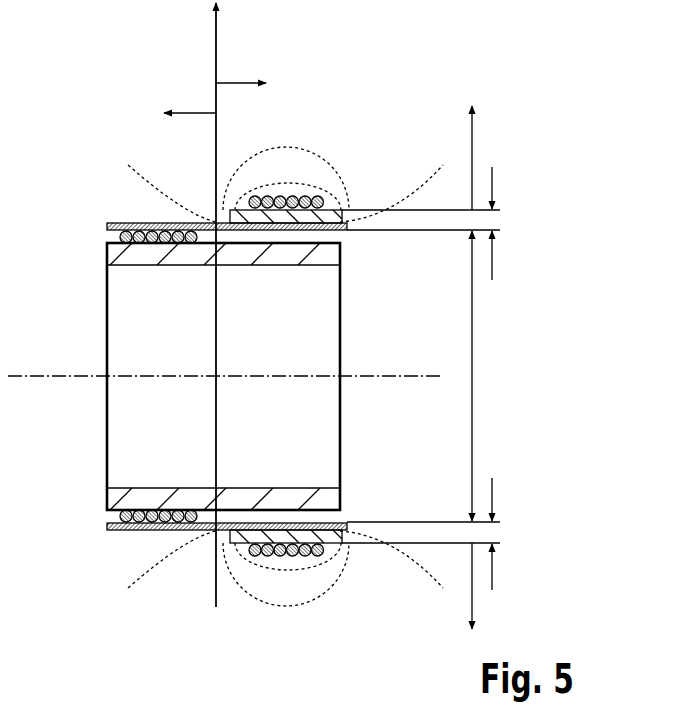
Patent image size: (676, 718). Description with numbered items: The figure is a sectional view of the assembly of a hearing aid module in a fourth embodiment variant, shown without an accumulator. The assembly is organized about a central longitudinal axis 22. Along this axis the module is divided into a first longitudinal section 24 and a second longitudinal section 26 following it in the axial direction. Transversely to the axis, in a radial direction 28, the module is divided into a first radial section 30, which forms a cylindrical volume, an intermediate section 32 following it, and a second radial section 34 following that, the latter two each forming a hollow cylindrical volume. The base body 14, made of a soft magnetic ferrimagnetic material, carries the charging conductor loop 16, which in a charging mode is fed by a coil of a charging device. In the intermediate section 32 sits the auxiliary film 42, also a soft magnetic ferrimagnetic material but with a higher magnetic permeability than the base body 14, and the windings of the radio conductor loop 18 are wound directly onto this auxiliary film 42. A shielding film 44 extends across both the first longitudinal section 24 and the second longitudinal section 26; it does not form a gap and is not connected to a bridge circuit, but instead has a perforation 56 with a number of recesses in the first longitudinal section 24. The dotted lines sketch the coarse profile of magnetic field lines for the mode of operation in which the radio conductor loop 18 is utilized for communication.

The base body 14 is at (341, 256).
The charging conductor loop 16 is at (112, 238).
The radio conductor loop 18 is at (289, 194).
The central longitudinal axis 22 is at (405, 379).
The first longitudinal section 24 is at (194, 110).
The second longitudinal section 26 is at (233, 80).
The radial direction 28 is at (214, 13).
The first radial section 30 is at (473, 410).
The intermediate section 32 is at (493, 222).
The second radial section 34 is at (473, 140).
The auxiliary film 42 is at (326, 205).
The shielding film 44 is at (106, 227).
The perforation 56 is at (117, 203).